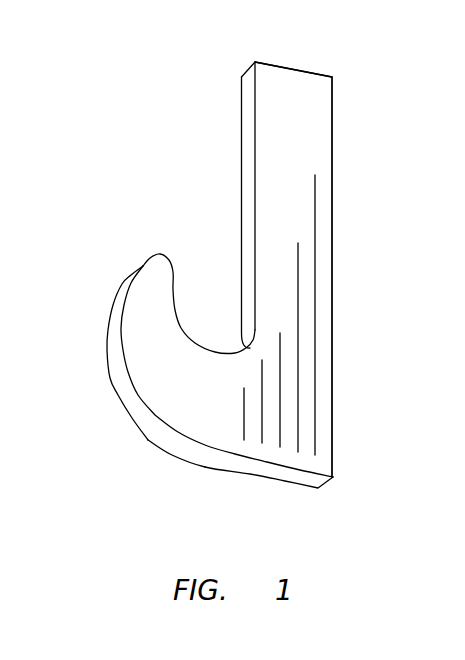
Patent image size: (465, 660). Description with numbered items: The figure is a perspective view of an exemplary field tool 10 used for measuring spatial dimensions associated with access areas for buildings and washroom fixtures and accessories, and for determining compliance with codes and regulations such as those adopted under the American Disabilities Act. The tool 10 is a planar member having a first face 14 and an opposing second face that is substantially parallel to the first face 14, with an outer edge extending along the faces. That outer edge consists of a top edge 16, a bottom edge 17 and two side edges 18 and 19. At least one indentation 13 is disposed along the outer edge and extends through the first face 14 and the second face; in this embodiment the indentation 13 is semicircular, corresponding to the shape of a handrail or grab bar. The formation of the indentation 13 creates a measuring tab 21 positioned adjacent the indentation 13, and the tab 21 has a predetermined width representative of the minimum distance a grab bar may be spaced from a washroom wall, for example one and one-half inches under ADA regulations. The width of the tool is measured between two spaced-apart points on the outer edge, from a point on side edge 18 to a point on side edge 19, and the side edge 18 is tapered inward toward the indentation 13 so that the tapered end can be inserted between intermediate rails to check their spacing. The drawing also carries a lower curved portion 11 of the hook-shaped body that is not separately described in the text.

The field tool 10 is at (373, 136).
The lower curved hook portion 11 is at (152, 445).
The indentation 13 is at (223, 317).
The first face 14 is at (310, 153).
The top edge 16 is at (298, 72).
The bottom edge 17 is at (268, 478).
The side edge 18 is at (117, 347).
The side edge 19 is at (334, 265).
The measuring tab 21 is at (270, 102).